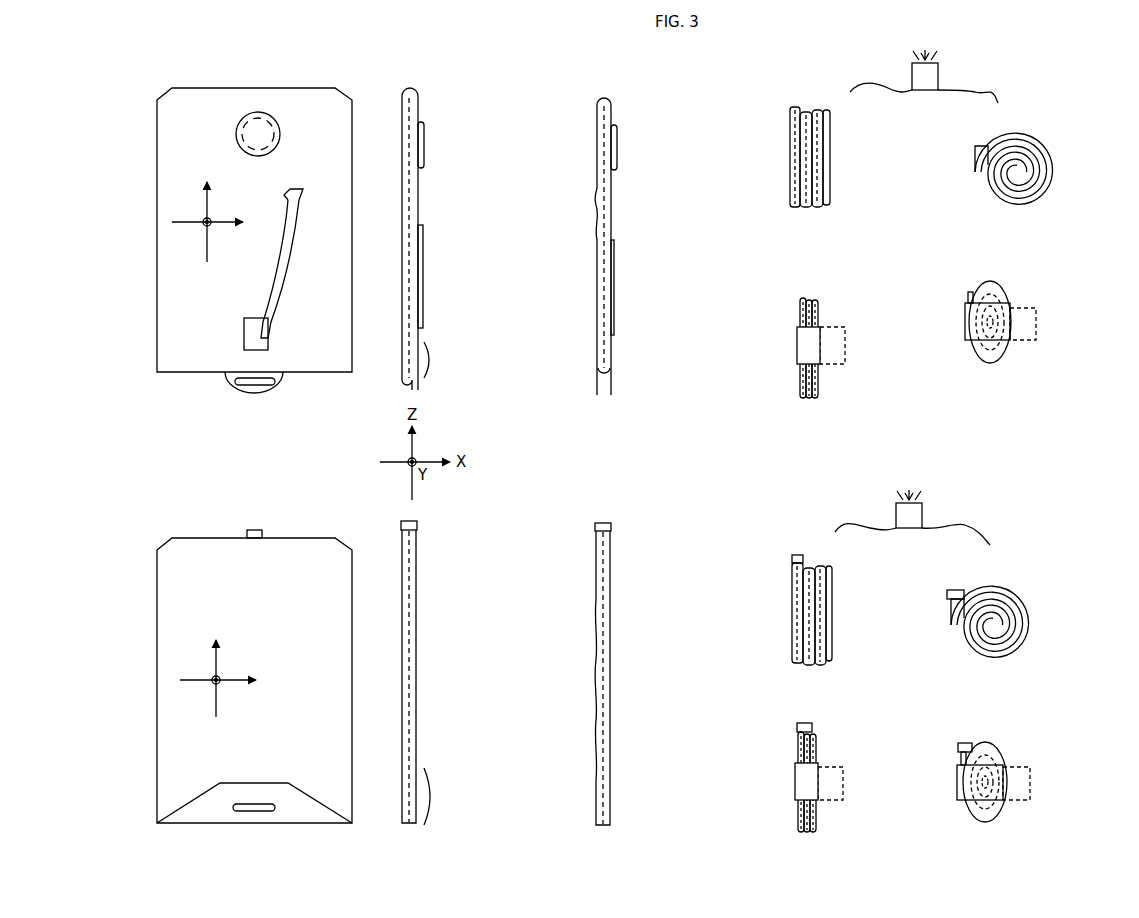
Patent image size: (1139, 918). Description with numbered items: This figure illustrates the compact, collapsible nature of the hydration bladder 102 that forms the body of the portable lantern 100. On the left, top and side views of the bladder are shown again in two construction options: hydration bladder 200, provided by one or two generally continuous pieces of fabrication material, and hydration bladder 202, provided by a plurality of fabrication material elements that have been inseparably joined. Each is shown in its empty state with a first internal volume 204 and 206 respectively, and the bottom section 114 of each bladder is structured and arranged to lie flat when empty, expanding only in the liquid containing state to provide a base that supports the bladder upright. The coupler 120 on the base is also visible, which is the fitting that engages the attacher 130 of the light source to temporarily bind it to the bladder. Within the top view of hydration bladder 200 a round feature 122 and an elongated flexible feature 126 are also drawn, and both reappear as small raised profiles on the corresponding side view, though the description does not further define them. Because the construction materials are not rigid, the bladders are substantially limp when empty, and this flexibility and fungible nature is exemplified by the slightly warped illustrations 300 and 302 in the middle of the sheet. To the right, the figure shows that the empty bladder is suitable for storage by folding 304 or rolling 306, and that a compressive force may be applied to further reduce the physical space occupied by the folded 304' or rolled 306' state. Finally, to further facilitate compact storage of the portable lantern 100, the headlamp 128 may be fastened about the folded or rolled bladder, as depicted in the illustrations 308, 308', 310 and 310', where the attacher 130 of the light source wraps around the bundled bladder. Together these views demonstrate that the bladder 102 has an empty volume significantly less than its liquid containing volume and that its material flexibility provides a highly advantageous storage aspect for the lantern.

The portable lantern 100 is at (1070, 78).
The hydration bladder 102 is at (228, 86).
The bottom section 114 is at (446, 583).
The coupler 120 is at (241, 393).
The camera 122 is at (252, 130).
The flexible cable 126 is at (286, 259).
The headlamp 128 is at (944, 74).
The attacher 130 is at (809, 352).
The hydration bladder 200 is at (333, 312).
The hydration bladder 202 is at (330, 722).
The first internal volume 204 is at (414, 206).
The first internal volume 206 is at (413, 607).
The slightly warped illustration 300 is at (621, 105).
The slightly warped illustration 302 is at (619, 552).
The folding 304 is at (842, 157).
The rolling 306 is at (1044, 147).
The illustration 308 is at (848, 334).
The illustration 310 is at (1037, 305).
The folded state 304' is at (846, 610).
The rolled state 306' is at (1021, 604).
The illustration 308' is at (845, 769).
The illustration 310' is at (1023, 761).